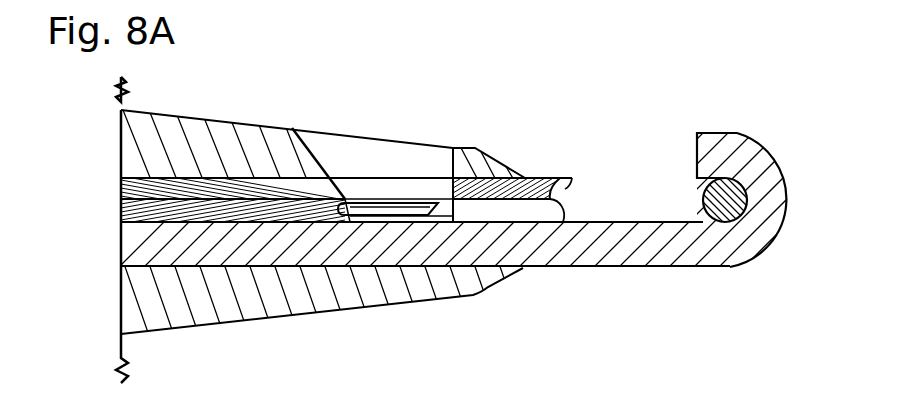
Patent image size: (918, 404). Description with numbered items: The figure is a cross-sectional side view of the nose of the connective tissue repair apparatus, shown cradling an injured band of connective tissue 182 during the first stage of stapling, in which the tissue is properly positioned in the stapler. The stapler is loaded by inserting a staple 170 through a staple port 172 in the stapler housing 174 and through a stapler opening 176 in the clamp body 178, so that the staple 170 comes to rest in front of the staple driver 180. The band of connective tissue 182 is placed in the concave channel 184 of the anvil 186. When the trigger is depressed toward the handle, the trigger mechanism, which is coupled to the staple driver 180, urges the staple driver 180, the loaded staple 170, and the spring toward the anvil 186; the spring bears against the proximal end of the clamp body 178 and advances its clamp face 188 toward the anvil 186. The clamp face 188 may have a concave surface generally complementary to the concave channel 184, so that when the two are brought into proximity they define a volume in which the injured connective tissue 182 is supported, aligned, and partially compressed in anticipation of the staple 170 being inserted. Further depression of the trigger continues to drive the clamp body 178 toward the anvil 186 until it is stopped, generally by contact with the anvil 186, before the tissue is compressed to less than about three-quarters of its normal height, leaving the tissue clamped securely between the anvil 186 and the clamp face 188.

The staple 170 is at (383, 207).
The staple port 172 is at (452, 160).
The stapler housing 174 is at (213, 325).
The stapler opening 176 is at (447, 202).
The clamp body 178 is at (541, 178).
The staple driver 180 is at (264, 210).
The connective tissue 182 is at (703, 197).
The concave channel 184 is at (730, 192).
The anvil 186 is at (793, 198).
The clamp face 188 is at (568, 188).